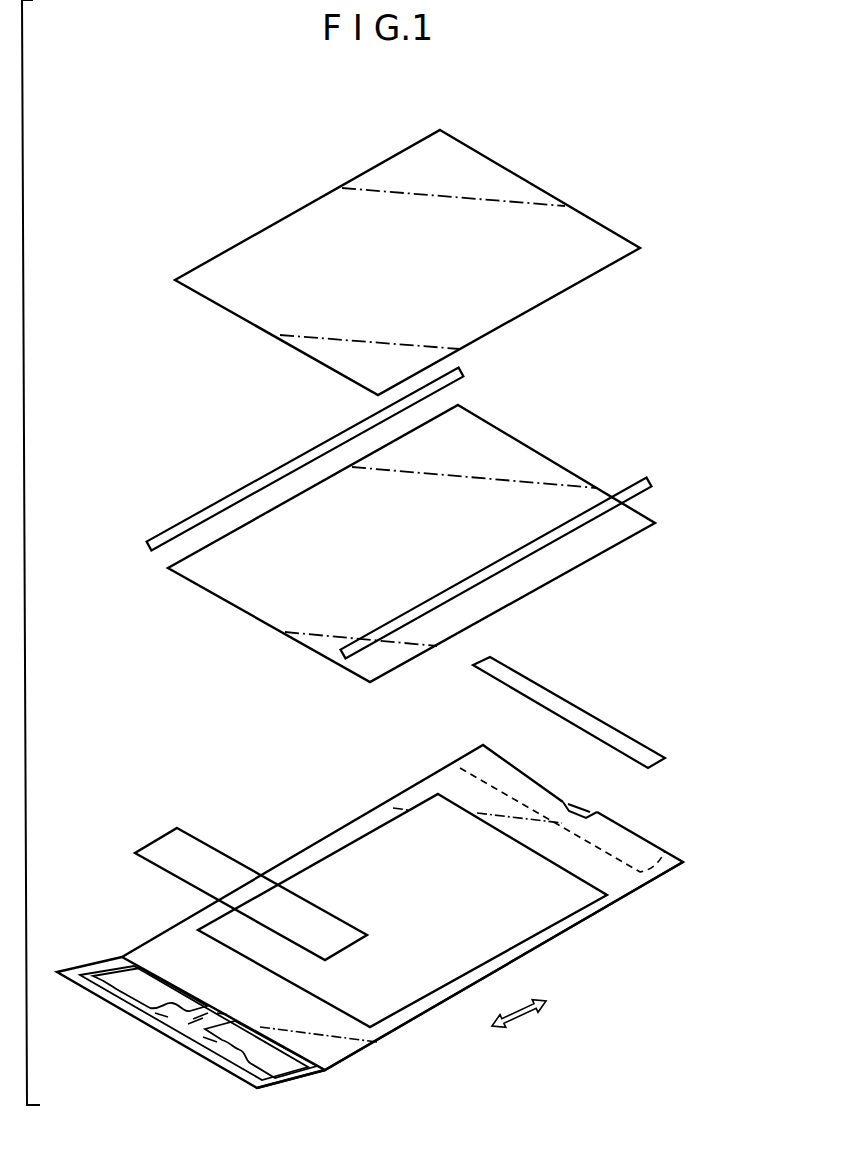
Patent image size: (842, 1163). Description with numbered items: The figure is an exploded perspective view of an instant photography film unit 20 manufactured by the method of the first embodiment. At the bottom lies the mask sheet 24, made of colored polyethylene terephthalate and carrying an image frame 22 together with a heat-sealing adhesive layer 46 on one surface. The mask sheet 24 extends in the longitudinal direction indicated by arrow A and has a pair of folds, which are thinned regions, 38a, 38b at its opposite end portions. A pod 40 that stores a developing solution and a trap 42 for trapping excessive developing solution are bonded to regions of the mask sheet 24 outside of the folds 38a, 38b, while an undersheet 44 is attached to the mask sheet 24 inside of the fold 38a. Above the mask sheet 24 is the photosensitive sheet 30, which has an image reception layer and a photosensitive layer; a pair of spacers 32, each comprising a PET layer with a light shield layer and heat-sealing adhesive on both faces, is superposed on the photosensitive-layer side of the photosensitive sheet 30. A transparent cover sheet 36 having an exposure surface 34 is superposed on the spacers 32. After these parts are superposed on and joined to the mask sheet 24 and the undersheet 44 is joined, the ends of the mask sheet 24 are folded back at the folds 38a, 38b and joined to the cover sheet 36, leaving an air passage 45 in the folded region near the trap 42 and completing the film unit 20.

The instant photography film unit 20 is at (579, 69).
The image frame 22 is at (514, 942).
The mask sheet 24 is at (600, 914).
The photosensitive sheet 30 is at (579, 472).
The spacers 32 is at (649, 483).
The exposure surface 34 is at (478, 171).
The transparent cover sheet 36 is at (568, 227).
The fold 38a is at (325, 1073).
The fold 38b is at (666, 850).
The pod 40 is at (140, 982).
The trap 42 is at (601, 723).
The undersheet 44 is at (217, 863).
The air passage 45 is at (578, 803).
The heat-sealing adhesive layer 46 is at (411, 1020).